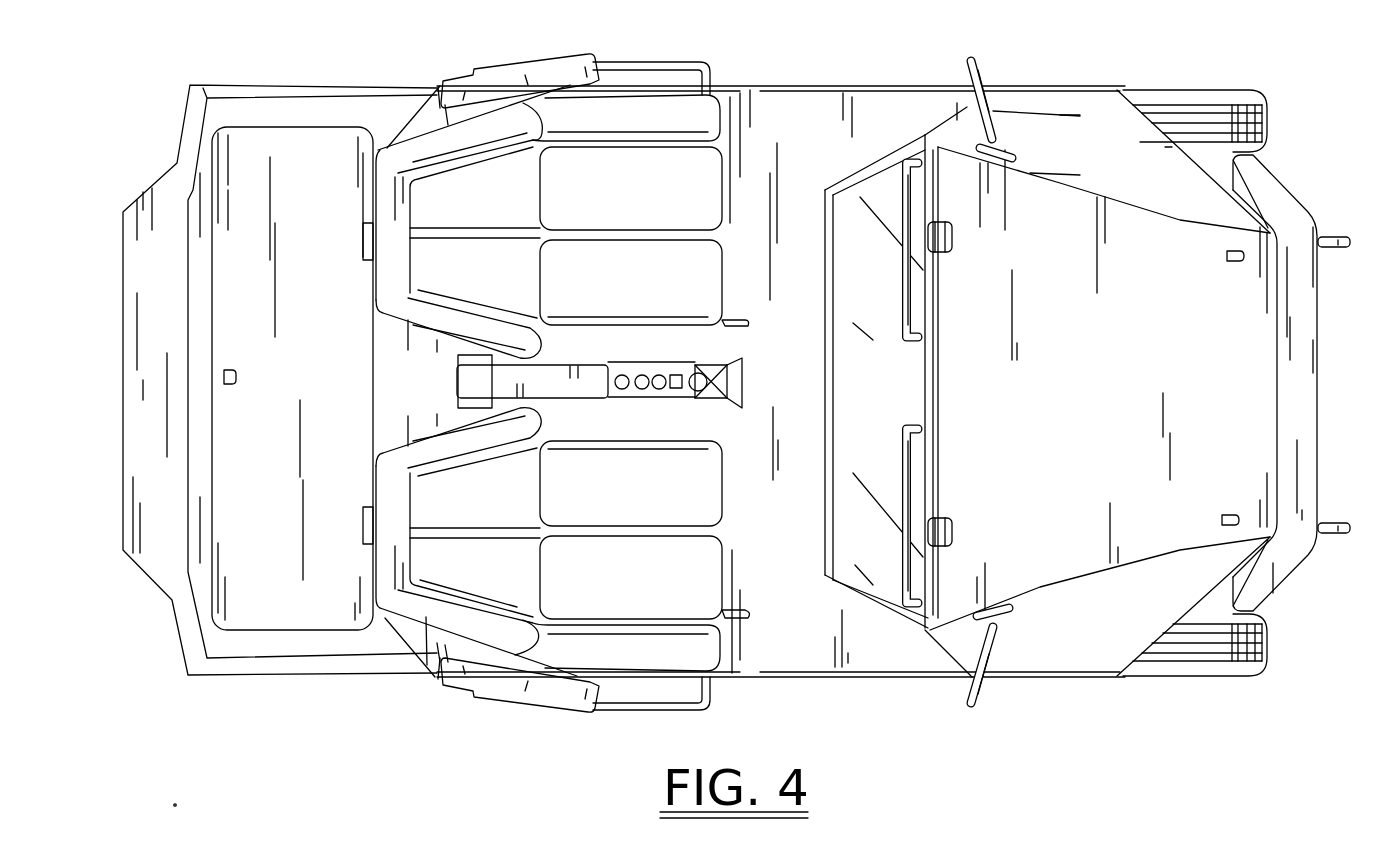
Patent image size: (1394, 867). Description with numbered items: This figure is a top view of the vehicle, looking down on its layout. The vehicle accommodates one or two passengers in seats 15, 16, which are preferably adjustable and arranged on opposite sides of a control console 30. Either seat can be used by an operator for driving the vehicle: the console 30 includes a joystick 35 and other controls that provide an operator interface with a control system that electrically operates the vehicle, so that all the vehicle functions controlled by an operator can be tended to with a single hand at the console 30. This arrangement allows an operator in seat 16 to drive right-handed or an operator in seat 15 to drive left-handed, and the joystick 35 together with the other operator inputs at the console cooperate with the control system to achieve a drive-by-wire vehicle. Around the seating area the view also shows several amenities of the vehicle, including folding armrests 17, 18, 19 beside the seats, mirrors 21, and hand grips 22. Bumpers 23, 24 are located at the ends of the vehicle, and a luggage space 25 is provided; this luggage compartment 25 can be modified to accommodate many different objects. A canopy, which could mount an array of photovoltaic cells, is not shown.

The seat 15 is at (427, 627).
The seat 16 is at (432, 143).
The folding armrest 17 is at (552, 697).
The folding armrest 18 is at (590, 382).
The folding armrest 19 is at (512, 78).
The mirror 21 is at (988, 58).
The hand grip 22 is at (907, 190).
The bumper 23 is at (1305, 430).
The bumper 24 is at (123, 273).
The luggage space 25 is at (297, 143).
The control console 30 is at (743, 377).
The joystick 35 is at (700, 383).